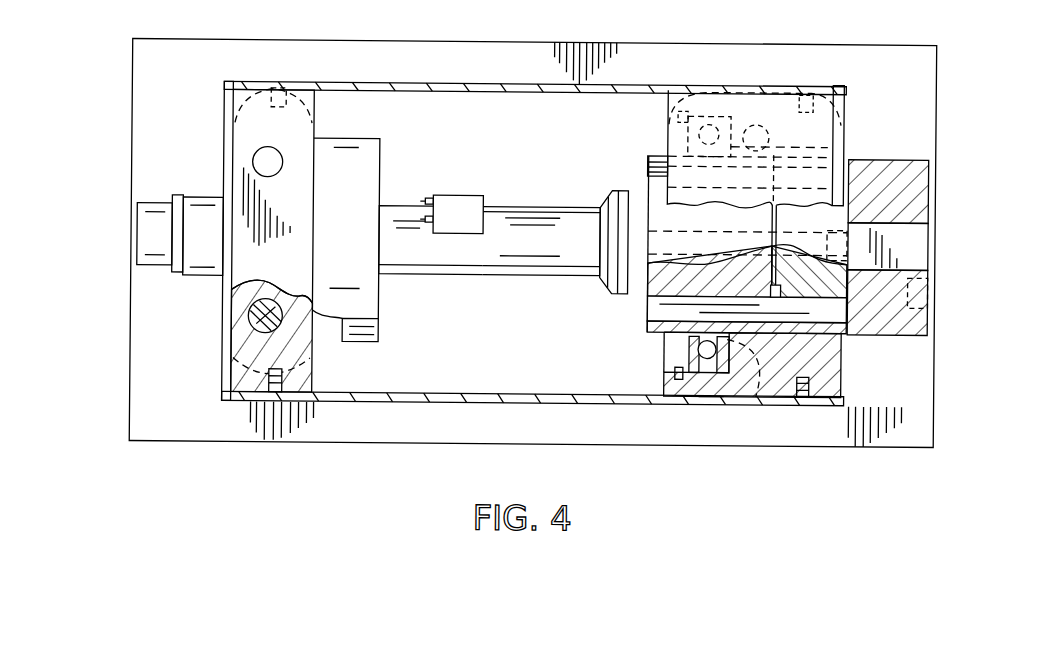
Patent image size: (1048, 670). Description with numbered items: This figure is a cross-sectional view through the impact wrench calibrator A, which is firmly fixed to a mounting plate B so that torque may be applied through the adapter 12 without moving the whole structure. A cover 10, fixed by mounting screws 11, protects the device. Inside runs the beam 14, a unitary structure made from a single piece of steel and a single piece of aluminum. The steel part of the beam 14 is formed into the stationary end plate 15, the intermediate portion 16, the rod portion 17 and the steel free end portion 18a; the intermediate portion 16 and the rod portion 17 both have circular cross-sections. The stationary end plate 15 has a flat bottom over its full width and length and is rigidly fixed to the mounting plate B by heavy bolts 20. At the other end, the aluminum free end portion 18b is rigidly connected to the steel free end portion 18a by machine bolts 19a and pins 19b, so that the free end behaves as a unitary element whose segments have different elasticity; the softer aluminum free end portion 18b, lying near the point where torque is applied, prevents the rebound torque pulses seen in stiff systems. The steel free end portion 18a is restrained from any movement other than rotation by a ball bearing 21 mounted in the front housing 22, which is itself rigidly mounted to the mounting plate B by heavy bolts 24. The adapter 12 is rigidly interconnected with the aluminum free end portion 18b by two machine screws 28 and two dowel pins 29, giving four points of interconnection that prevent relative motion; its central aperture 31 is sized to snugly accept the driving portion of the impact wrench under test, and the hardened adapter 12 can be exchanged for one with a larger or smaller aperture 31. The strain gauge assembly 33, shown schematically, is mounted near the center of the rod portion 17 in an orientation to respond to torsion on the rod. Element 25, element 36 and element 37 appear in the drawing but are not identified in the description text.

The impact wrench calibrator A is at (362, 78).
The mounting plate B is at (928, 440).
The cover 10 is at (410, 404).
The mounting screws 11 is at (273, 394).
The adapter 12 is at (930, 158).
The beam 14 is at (399, 206).
The stationary end plate 15 is at (242, 124).
The intermediate portion 16 is at (358, 141).
The rod portion 17 is at (531, 206).
The steel free end portion 18a is at (662, 336).
The aluminum free end portion 18b is at (840, 338).
The machine bolts 19a is at (638, 250).
The pins 19b is at (655, 305).
The heavy bolts 20 is at (256, 320).
The ball bearing 21 is at (713, 403).
The front housing 22 is at (850, 102).
The heavy bolts 24 is at (750, 345).
The ball 25 is at (700, 356).
The machine screws 28 is at (930, 289).
The dowel pins 29 is at (935, 177).
The aperture 31 is at (918, 238).
The strain gauge assembly 33 is at (462, 202).
The terminals 36 is at (432, 198).
The output shaft 37 is at (165, 207).